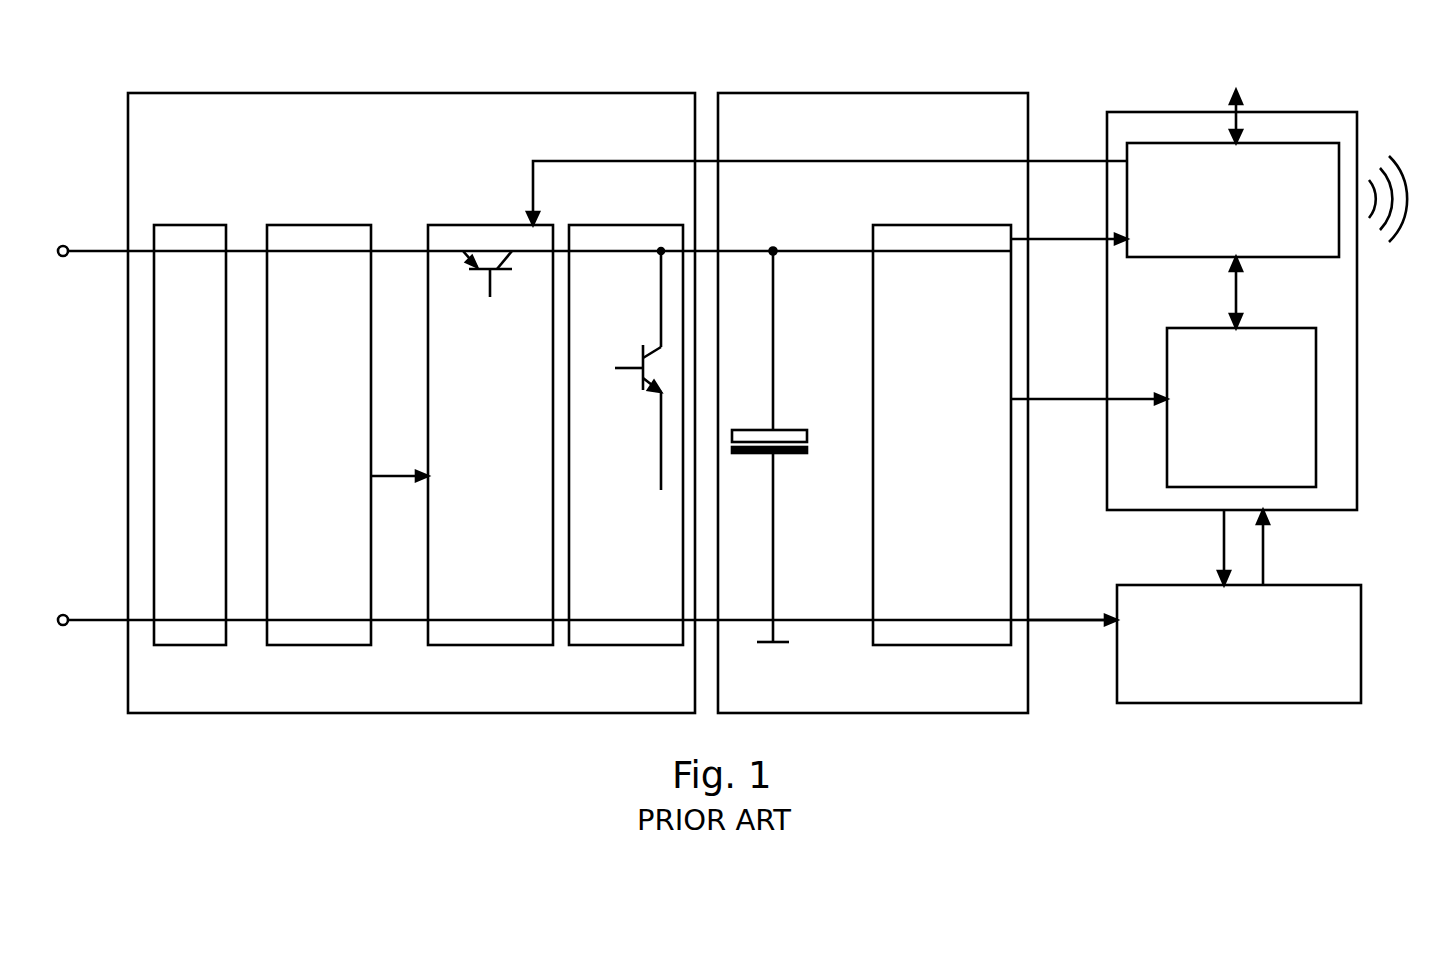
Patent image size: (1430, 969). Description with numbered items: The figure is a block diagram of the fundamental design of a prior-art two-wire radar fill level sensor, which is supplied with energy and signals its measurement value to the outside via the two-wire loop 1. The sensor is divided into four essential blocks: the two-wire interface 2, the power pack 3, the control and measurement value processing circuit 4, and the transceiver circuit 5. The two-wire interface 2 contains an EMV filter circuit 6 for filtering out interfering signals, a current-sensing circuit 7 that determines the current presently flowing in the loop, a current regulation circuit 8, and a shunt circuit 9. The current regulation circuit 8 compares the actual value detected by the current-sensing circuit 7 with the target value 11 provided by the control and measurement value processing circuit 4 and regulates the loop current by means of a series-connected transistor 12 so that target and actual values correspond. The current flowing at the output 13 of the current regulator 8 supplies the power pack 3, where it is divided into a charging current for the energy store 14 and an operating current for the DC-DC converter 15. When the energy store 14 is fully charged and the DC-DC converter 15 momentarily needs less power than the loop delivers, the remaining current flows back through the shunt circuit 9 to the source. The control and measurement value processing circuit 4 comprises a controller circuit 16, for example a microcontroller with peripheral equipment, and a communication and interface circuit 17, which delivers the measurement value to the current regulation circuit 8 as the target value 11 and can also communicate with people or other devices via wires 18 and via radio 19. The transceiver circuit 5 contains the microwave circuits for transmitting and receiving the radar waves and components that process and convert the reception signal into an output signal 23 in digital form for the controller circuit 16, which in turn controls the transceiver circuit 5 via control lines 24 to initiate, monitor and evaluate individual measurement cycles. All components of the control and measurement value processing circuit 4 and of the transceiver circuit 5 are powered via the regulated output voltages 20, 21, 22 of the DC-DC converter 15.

The two-wire loop 1 is at (101, 251).
The two-wire interface 2 is at (448, 93).
The power pack 3 is at (879, 93).
The control and measurement value processing circuit 4 is at (1124, 112).
The transceiver circuit 5 is at (1128, 585).
The EMV filter circuit 6 is at (192, 225).
The current-sensing circuit 7 is at (311, 225).
The current regulation circuit 8 is at (478, 225).
The shunt circuit 9 is at (650, 225).
The target value 11 is at (830, 161).
The transistor 12 is at (498, 271).
The output 13 is at (732, 251).
The energy store 14 is at (790, 430).
The DC-DC converter 15 is at (925, 225).
The controller circuit 16 is at (1192, 328).
The communication and interface circuit 17 is at (1310, 143).
The wires 18 is at (1240, 118).
The radio 19 is at (1383, 244).
The regulated output voltage 20 is at (1093, 239).
The regulated output voltage 21 is at (1093, 399).
The regulated output voltage 22 is at (1093, 620).
The output signal 23 is at (1264, 536).
The control lines 24 is at (1222, 543).